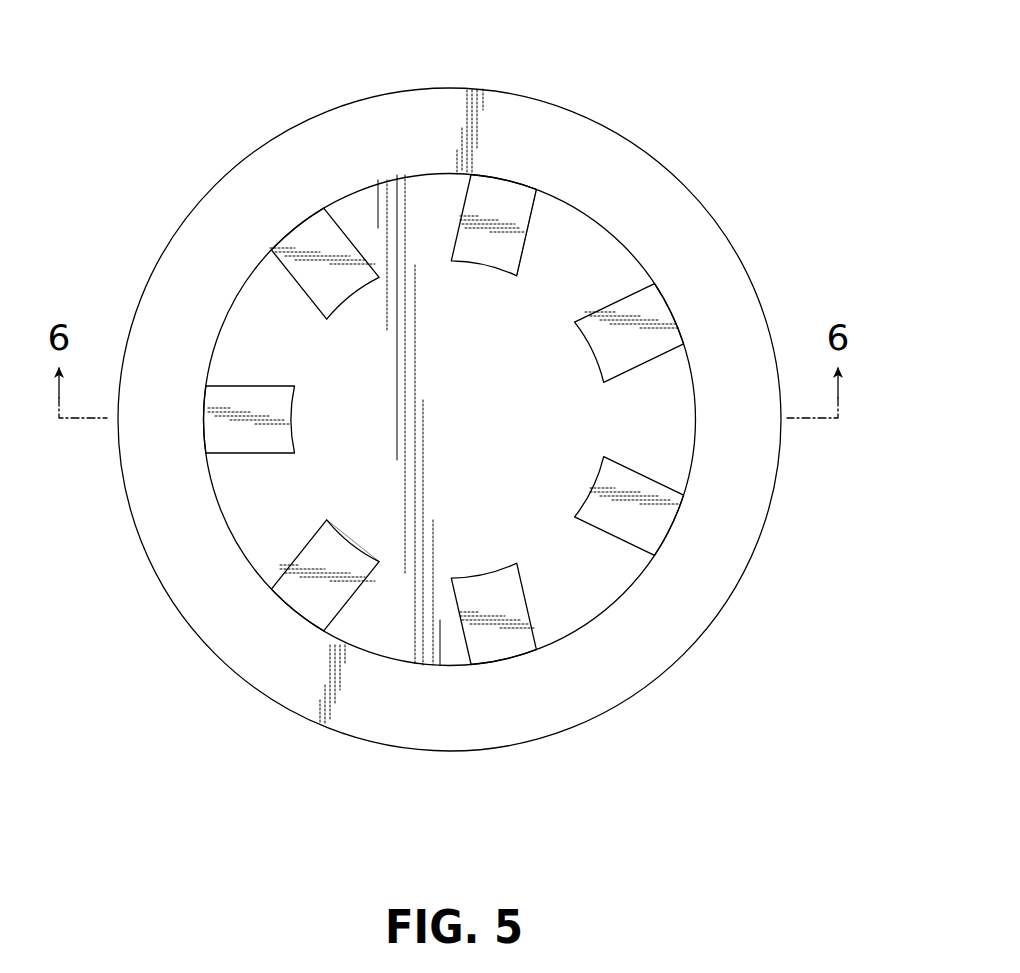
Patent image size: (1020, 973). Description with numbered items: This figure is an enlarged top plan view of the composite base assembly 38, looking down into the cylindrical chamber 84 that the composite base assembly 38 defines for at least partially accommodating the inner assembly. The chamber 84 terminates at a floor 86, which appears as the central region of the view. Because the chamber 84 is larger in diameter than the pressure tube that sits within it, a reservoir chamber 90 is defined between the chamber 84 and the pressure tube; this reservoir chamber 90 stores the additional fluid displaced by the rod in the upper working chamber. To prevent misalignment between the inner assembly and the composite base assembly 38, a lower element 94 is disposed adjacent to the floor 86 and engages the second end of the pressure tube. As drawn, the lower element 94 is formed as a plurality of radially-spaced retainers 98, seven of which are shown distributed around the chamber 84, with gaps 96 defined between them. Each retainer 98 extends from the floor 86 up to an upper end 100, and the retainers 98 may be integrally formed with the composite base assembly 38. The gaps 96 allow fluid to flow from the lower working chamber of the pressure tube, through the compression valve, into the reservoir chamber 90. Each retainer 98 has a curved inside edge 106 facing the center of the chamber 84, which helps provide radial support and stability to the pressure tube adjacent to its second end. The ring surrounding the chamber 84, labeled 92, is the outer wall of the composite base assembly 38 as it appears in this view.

The composite base assembly 38 is at (684, 118).
The chamber 84 is at (395, 560).
The floor 86 is at (474, 340).
The reservoir chamber 90 is at (268, 510).
The annular yoke 92 is at (517, 128).
The lower element 94 is at (598, 512).
The gap 96 is at (427, 192).
The retainer 98 is at (309, 300).
The upper end 100 is at (508, 214).
The curved inside edge 106 is at (346, 291).